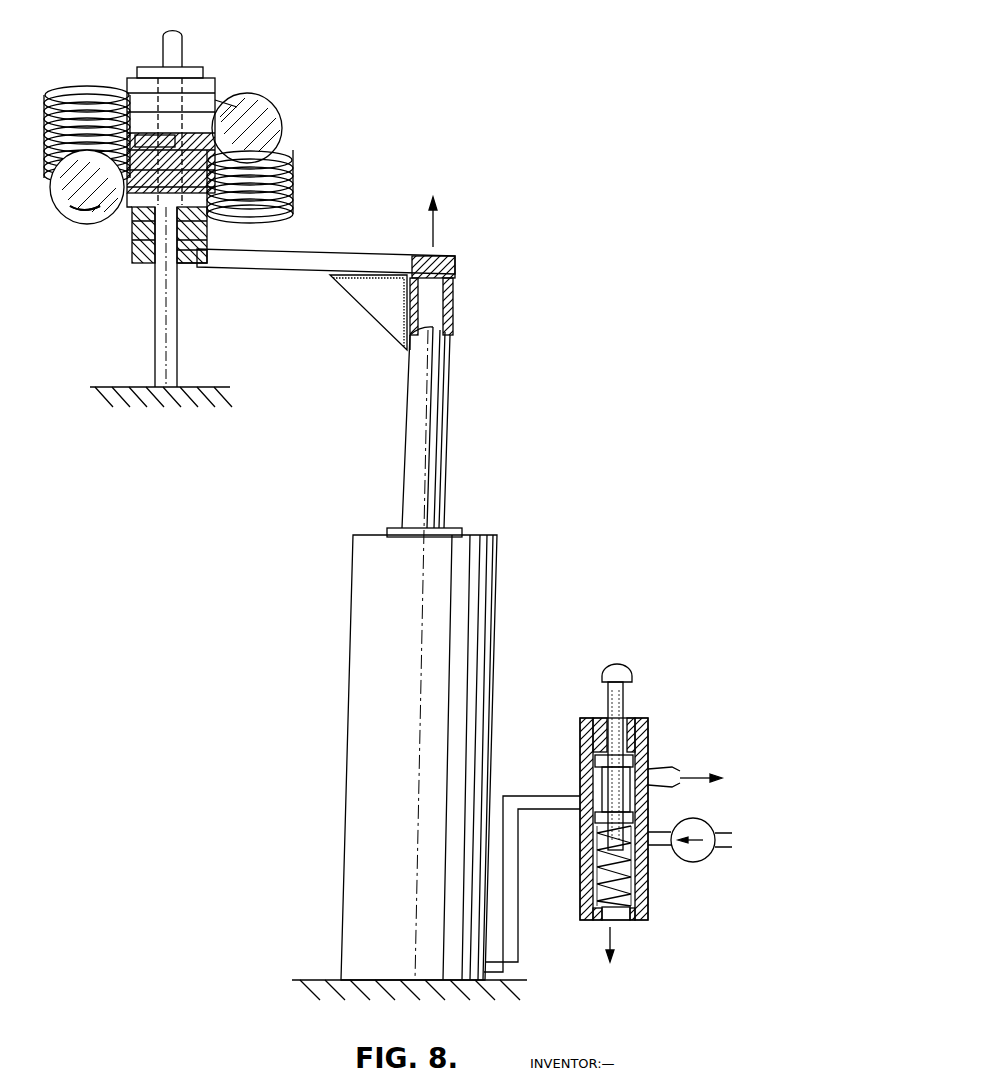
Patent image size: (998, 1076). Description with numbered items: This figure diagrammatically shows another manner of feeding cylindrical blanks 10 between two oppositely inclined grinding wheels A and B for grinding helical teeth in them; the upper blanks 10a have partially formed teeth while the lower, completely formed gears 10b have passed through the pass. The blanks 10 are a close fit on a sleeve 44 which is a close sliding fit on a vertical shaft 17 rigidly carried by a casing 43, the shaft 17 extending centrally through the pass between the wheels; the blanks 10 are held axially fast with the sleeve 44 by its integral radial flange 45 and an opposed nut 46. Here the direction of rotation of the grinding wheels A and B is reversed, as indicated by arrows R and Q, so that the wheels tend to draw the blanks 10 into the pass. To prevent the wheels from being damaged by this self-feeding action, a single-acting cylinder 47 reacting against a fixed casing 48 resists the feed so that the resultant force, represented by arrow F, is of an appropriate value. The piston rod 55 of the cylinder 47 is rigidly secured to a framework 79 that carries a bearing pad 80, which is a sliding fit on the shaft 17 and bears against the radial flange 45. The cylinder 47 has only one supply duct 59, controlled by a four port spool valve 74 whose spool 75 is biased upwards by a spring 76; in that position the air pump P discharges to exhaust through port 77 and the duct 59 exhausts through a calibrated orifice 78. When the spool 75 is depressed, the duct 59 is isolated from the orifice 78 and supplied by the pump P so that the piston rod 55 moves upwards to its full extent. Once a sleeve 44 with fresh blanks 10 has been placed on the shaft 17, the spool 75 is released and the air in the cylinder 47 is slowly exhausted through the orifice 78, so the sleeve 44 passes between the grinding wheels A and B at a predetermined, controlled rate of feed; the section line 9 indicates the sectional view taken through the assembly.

The section line 9- 9 is at (173, 32).
The cylindrical blanks 10 is at (203, 127).
The blanks with partially formed helical teeth 10a is at (140, 135).
The completely formed gears 10b is at (130, 223).
The nut 46 is at (190, 73).
The arrow indicating direction of rotation of grinding wheel B Q is at (237, 107).
The grinding wheel A is at (62, 203).
The arrow indicating direction of rotation of grinding wheel A R is at (102, 207).
The grinding wheel B is at (277, 130).
The sleeve 44 is at (290, 163).
The radial flange 45 is at (190, 237).
The bearing pad 80 is at (198, 262).
The framework 79 is at (307, 258).
The vertical shaft 17 is at (163, 362).
The casing 43 is at (180, 408).
The arrow representing feeding force F is at (432, 212).
The piston rod 55 is at (420, 435).
The cylinder 47 is at (404, 656).
The fixed casing 48 is at (312, 982).
The supply duct 59 is at (510, 870).
The four port spool valve 74 is at (593, 912).
The spool 75 is at (607, 790).
The spring 76 is at (640, 853).
The exhaust port 77 is at (617, 917).
The calibrated orifice 78 is at (662, 773).
The air pump P is at (690, 840).